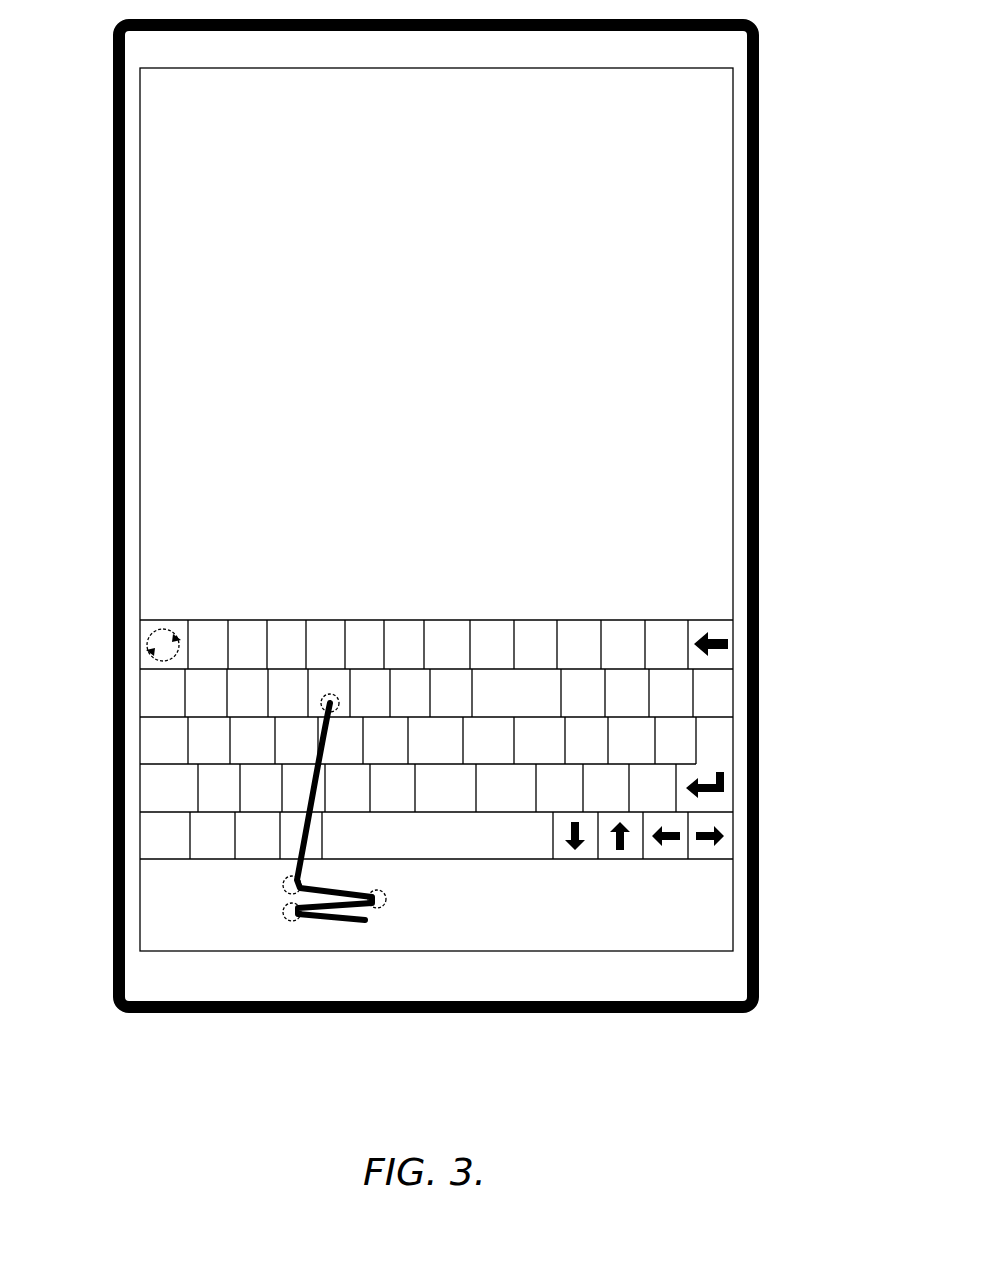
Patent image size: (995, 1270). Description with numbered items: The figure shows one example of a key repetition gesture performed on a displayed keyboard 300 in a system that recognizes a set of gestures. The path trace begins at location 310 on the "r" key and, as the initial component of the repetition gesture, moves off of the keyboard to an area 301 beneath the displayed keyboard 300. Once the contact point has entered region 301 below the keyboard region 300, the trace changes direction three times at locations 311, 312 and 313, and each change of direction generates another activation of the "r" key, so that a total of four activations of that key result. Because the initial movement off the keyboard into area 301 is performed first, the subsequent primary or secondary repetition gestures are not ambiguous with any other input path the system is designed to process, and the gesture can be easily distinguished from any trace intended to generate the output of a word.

The displayed keyboard 300 is at (796, 855).
The area beneath the displayed keyboard 301 is at (799, 948).
The location on the "r" key 310 is at (321, 702).
The first direction-change location 311 is at (283, 884).
The second direction-change location 312 is at (383, 906).
The third direction-change location 313 is at (283, 912).